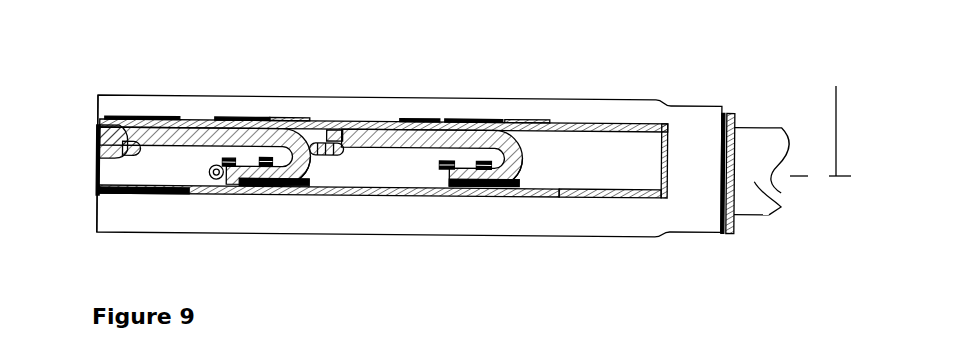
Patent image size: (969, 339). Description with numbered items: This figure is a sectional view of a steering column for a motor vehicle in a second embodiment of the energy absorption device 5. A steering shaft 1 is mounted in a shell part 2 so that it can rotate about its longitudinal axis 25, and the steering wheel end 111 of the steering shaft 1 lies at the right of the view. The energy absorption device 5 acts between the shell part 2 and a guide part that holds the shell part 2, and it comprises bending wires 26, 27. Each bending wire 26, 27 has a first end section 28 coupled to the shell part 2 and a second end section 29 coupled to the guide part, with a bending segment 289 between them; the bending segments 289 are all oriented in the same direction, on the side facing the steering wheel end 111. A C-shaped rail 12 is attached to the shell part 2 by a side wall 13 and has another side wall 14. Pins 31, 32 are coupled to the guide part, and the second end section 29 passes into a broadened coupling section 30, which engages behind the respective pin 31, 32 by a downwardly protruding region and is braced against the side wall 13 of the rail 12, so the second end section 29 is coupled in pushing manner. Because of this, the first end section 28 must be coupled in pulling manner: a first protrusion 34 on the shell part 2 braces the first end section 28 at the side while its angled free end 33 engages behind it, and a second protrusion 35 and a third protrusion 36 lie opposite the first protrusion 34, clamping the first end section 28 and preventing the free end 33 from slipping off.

The steering shaft 1 is at (752, 148).
The shell part 2 is at (693, 123).
The energy absorption device 5 is at (90, 181).
The rail 12 is at (430, 116).
The side wall 13 is at (613, 127).
The other side wall 14 is at (588, 196).
The longitudinal axis 25 is at (820, 120).
The bending wire 26 is at (414, 150).
The bending wire 27 is at (188, 132).
The first end section 28 is at (262, 170).
The second end section 29 is at (128, 162).
The coupling section 30 is at (118, 127).
The pin 31 is at (338, 133).
The pin 32 is at (99, 130).
The angled free end 33 is at (228, 170).
The first protrusion 34 is at (277, 190).
The second protrusion 35 is at (291, 126).
The third protrusion 36 is at (246, 130).
The steering wheel end 111 is at (781, 210).
The bending segment 289 is at (300, 185).